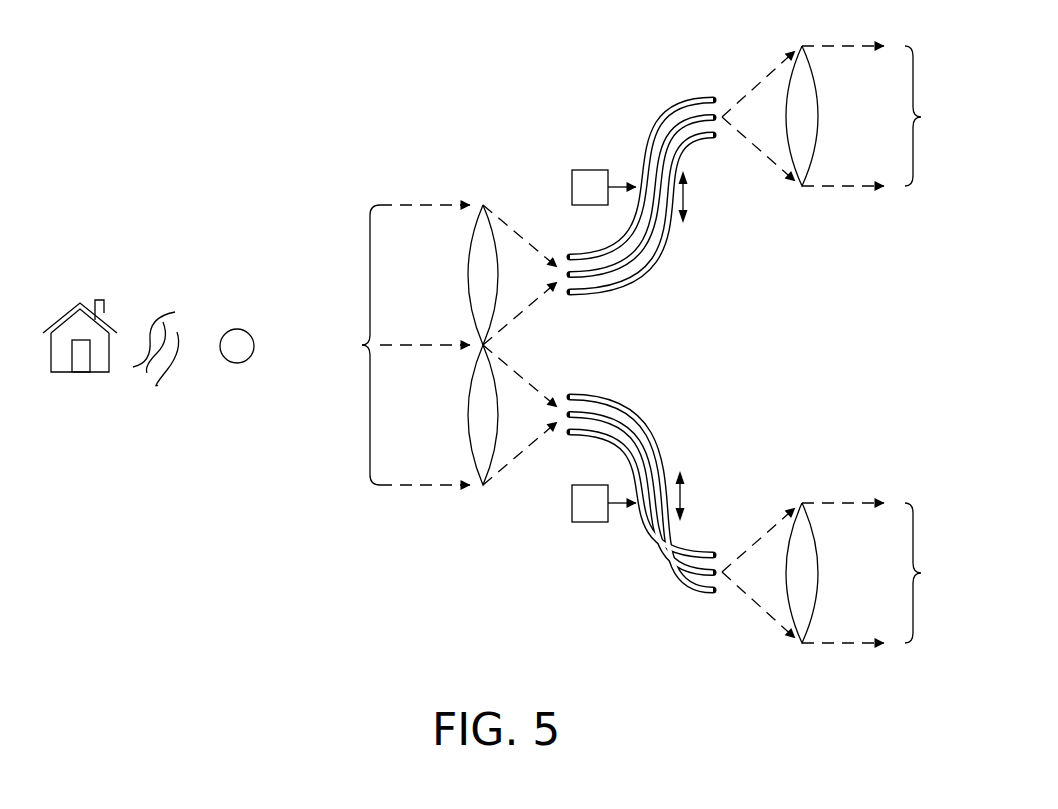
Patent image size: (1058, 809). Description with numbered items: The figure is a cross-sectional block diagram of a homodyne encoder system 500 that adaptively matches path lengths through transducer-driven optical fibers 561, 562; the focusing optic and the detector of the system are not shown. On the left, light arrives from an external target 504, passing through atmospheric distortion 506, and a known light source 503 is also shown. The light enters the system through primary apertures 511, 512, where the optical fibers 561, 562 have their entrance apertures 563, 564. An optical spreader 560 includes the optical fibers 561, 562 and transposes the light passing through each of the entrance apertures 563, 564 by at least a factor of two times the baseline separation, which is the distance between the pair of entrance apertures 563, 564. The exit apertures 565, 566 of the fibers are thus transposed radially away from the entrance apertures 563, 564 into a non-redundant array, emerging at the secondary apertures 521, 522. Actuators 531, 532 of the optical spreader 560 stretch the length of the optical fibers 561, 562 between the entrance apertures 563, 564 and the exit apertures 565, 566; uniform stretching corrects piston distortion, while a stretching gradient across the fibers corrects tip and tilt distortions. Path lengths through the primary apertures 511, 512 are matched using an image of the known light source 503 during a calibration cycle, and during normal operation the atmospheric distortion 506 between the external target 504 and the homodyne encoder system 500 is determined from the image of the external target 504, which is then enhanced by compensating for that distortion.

The homodyne encoder system 500 is at (236, 68).
The optical spreader 560 is at (504, 68).
The known light source 503 is at (237, 363).
The external target 504 is at (100, 372).
The atmospheric distortion 506 is at (175, 312).
The primary aperture 511 is at (442, 275).
The primary aperture 512 is at (442, 415).
The secondary aperture 521 is at (873, 116).
The secondary aperture 522 is at (873, 573).
The actuator 531 is at (597, 170).
The actuator 532 is at (597, 485).
The optical fiber 561 is at (651, 279).
The optical fiber 562 is at (652, 407).
The entrance aperture 563 is at (563, 251).
The entrance aperture 564 is at (561, 392).
The exit aperture 565 is at (724, 92).
The exit aperture 566 is at (724, 549).